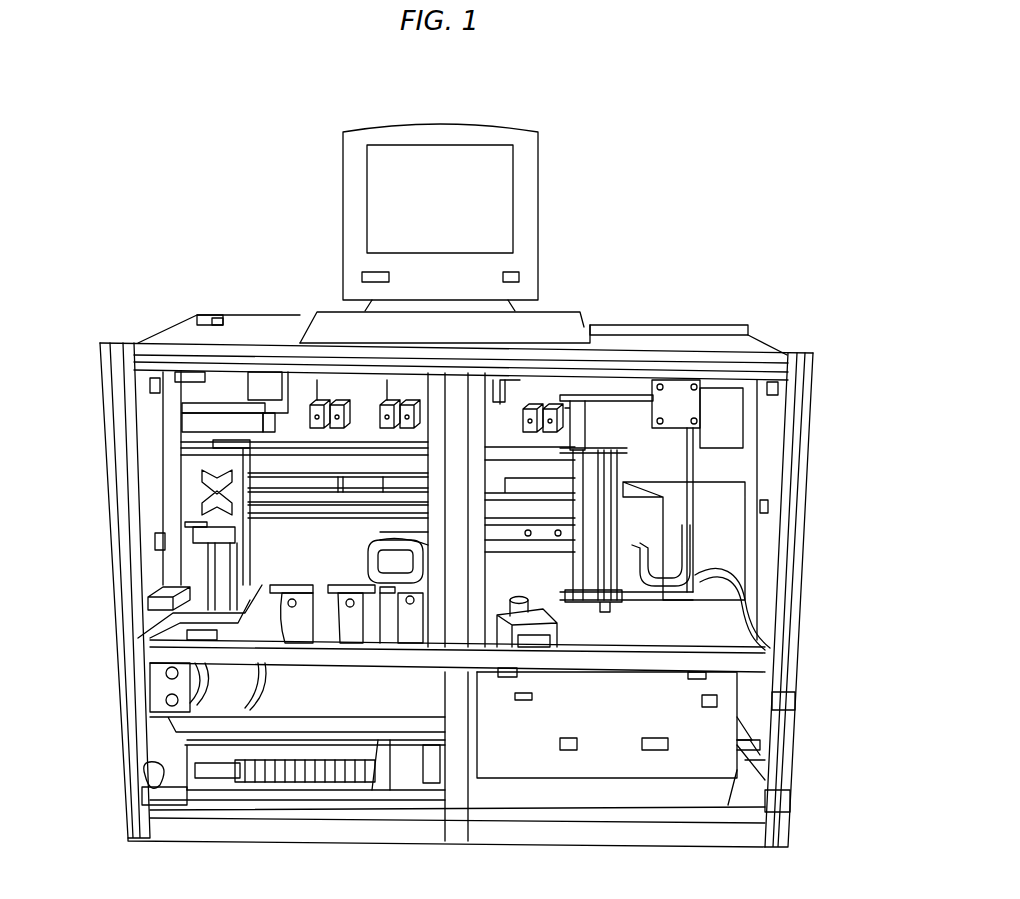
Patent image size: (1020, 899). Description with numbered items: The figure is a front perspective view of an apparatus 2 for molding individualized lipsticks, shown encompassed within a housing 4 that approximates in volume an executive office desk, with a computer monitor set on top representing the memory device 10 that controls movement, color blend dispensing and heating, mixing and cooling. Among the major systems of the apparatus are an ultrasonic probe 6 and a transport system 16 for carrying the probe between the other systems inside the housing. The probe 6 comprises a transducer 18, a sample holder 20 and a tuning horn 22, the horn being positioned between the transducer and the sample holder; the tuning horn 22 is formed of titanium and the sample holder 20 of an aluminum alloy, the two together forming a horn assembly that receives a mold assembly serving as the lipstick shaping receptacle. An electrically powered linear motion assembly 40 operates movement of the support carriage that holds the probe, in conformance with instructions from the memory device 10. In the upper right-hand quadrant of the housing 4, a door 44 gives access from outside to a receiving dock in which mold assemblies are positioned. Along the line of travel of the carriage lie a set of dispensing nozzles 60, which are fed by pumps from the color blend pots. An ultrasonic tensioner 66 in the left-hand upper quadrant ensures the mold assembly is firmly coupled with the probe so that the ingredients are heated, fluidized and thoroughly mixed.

The apparatus 2 is at (812, 356).
The housing 4 is at (812, 400).
The ultrasonic probe 6 is at (614, 395).
The memory device 10 is at (538, 158).
The transport system 16 is at (537, 492).
The transducer 18 is at (683, 408).
The sample holder 20 is at (552, 410).
The tuning horn 22 is at (640, 400).
The linear motion assembly 40 is at (732, 517).
The door 44 is at (681, 345).
The dispensing nozzles 60 is at (495, 402).
The ultrasonic tensioner 66 is at (265, 427).